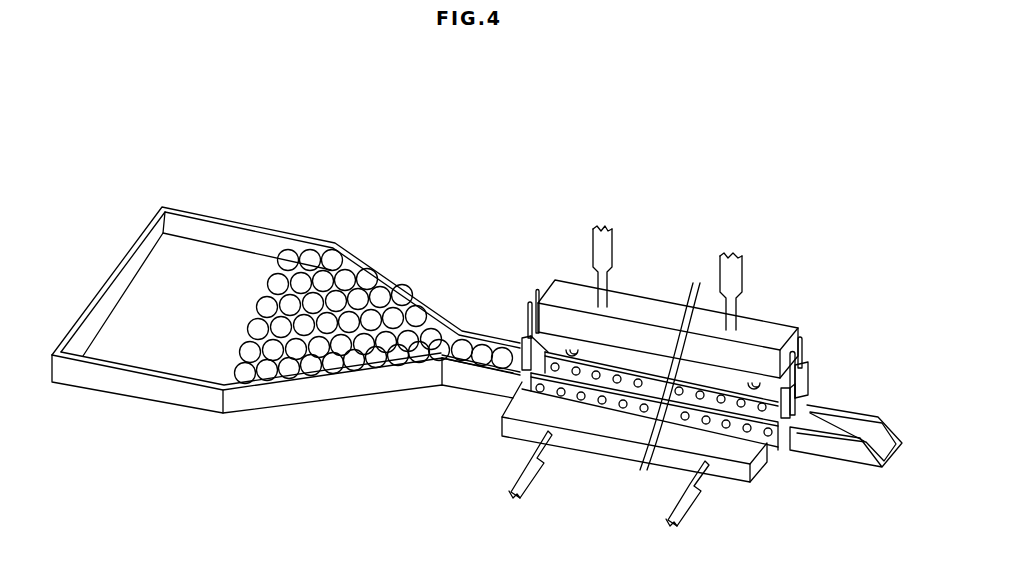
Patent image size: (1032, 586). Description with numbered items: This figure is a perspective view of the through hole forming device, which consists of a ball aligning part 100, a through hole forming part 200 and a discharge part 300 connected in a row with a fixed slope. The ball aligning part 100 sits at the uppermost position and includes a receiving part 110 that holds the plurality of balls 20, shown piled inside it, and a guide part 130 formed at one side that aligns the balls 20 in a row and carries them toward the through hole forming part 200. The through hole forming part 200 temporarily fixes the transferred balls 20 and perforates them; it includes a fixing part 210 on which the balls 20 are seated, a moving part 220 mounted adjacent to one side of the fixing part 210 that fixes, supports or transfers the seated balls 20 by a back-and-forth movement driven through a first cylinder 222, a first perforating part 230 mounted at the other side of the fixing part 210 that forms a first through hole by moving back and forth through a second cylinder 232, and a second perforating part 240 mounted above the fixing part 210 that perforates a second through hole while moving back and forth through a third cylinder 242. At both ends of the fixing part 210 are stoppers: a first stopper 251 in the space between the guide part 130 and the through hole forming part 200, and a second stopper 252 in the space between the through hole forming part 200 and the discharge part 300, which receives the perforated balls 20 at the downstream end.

The ball aligning part 100 is at (278, 180).
The receiving part 110 is at (140, 253).
The guide part 130 is at (433, 360).
The ball 20 is at (336, 262).
The through hole forming part 200 is at (645, 196).
The fixing part 210 is at (779, 456).
The moving part 220 is at (565, 366).
The first cylinder 222 is at (753, 378).
The first perforating part 230 is at (502, 420).
The second cylinder 232 is at (527, 470).
The second perforating part 240 is at (635, 302).
The third cylinder 242 is at (738, 273).
The first stopper 251 is at (522, 338).
The second stopper 252 is at (800, 383).
The discharge part 300 is at (853, 452).